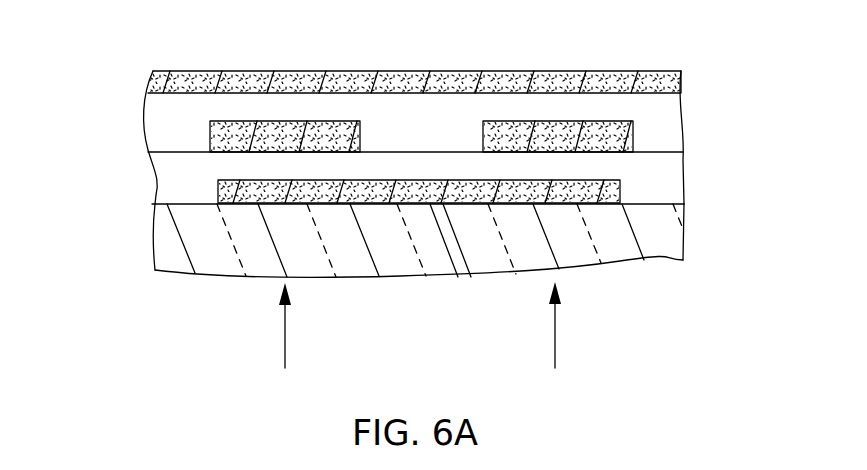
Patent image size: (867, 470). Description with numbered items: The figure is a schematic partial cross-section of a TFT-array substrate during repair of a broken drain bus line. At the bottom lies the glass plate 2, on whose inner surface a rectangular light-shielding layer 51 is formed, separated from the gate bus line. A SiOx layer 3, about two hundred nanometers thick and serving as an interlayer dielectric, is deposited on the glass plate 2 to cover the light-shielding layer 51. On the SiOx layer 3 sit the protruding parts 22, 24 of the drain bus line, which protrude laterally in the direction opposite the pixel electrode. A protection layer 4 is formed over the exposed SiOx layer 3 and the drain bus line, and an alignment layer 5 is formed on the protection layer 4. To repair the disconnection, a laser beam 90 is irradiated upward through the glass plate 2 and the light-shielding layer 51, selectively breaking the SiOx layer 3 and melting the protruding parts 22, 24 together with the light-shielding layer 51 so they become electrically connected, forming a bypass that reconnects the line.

The glass plate 2 is at (673, 248).
The SiOx layer 3 is at (425, 162).
The protection layer 4 is at (672, 122).
The alignment layer 5 is at (680, 78).
The protruding part 22 is at (276, 125).
The protruding part 24 is at (572, 125).
The light-shielding layer 51 is at (457, 277).
The laser beam 90 is at (283, 342).